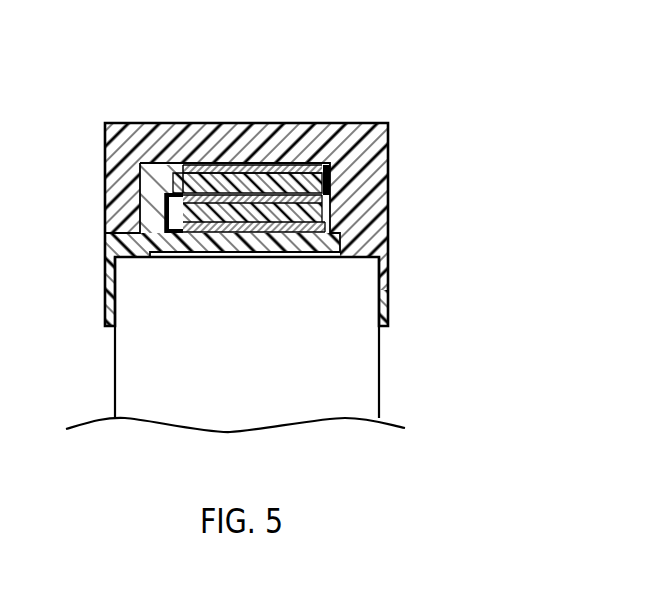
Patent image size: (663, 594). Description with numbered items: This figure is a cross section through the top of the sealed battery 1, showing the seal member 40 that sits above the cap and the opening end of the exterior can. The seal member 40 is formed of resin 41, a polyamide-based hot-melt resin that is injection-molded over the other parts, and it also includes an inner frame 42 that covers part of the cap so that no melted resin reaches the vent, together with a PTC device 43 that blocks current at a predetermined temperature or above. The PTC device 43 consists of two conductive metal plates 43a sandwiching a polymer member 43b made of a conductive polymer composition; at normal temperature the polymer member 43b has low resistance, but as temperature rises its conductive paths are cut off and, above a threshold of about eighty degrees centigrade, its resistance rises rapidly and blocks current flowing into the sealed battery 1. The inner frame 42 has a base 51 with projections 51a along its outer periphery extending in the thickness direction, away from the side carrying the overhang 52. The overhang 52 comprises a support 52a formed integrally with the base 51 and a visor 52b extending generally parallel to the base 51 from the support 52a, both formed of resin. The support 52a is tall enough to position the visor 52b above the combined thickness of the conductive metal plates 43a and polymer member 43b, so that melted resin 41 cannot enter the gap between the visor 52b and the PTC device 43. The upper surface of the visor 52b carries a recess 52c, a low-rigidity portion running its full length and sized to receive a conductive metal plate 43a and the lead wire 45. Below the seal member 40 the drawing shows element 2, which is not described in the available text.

The sealed battery 1 is at (435, 107).
The shaft 2 is at (383, 365).
The seal member 40 is at (152, 121).
The resin 41 is at (352, 123).
The inner frame 42 is at (395, 262).
The PTC device 43 is at (478, 163).
The conductive metal plates 43a is at (312, 199).
The polymer member 43b is at (313, 216).
The lead wire 45 is at (222, 160).
The base 51 is at (110, 237).
The projections 51a is at (385, 318).
The overhang 52 is at (342, 171).
The support 52a is at (153, 182).
The visor 52b is at (288, 180).
The recess 52c is at (186, 163).